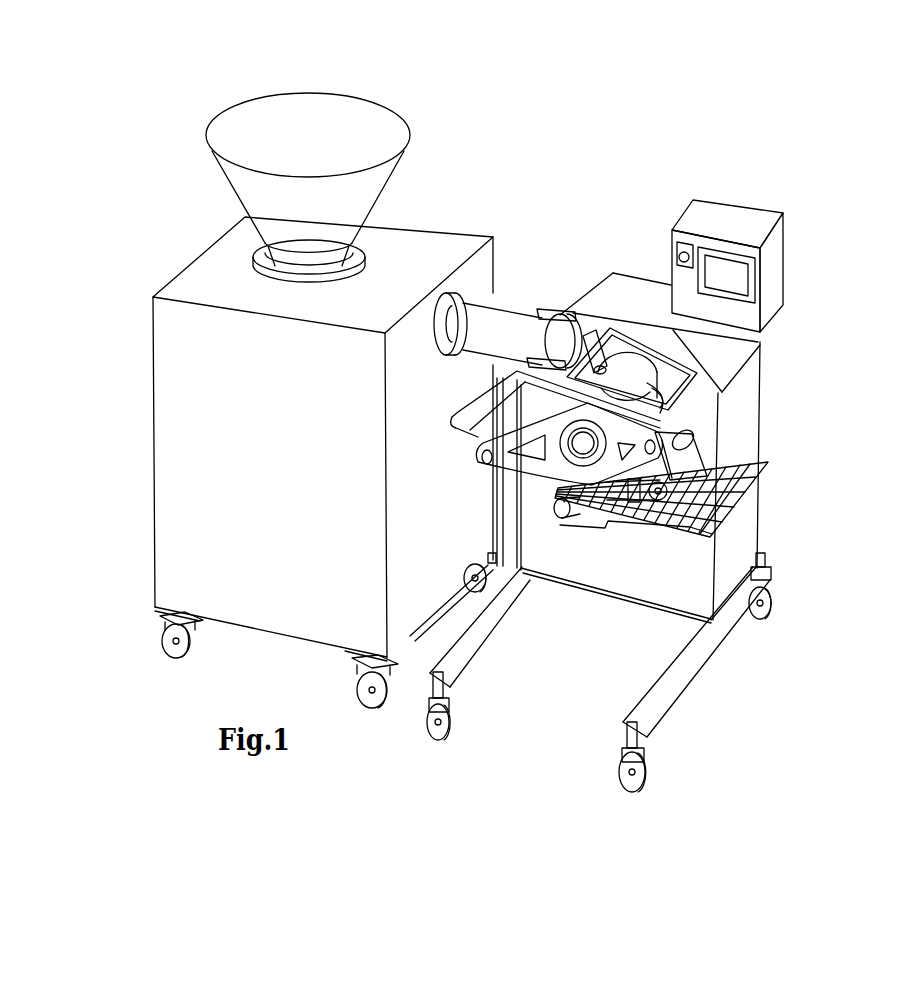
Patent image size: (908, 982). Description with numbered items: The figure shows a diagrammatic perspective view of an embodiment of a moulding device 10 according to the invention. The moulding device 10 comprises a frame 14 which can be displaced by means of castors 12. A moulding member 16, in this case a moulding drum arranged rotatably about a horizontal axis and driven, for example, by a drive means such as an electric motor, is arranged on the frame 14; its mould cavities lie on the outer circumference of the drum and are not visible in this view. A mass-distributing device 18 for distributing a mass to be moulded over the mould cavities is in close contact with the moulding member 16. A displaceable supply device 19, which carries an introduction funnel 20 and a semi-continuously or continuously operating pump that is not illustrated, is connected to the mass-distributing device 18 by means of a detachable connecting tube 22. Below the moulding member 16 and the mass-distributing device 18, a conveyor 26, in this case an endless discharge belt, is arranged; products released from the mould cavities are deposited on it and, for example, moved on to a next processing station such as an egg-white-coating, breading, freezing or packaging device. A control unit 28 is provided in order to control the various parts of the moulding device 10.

The moulding device 10 is at (806, 356).
The castors 12 is at (767, 615).
The frame 14 is at (697, 658).
The moulding member 16 is at (600, 462).
The mass-distributing device 18 is at (627, 360).
The supply device 19 is at (170, 372).
The introduction funnel 20 is at (378, 183).
The connecting tube 22 is at (512, 320).
The conveyor 26 is at (760, 480).
The control unit 28 is at (780, 257).